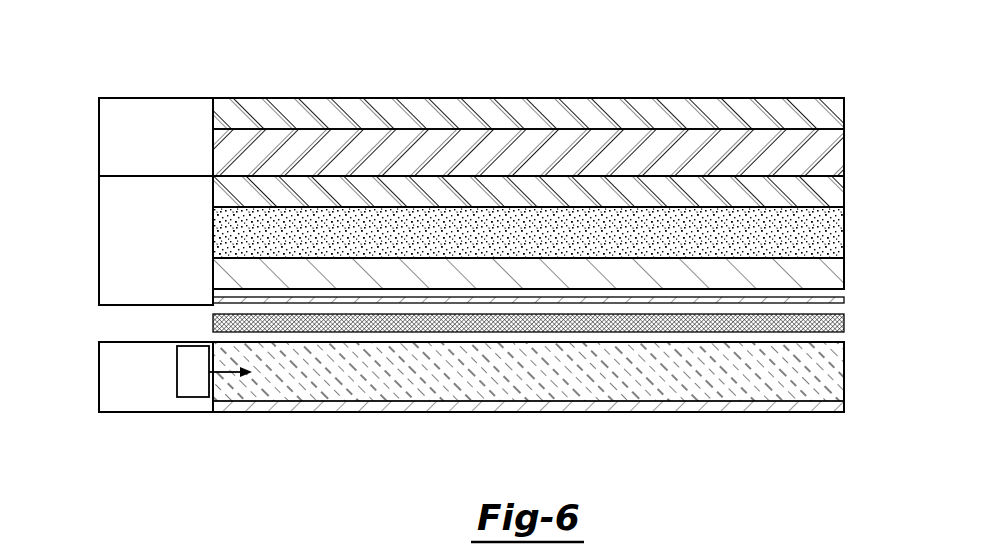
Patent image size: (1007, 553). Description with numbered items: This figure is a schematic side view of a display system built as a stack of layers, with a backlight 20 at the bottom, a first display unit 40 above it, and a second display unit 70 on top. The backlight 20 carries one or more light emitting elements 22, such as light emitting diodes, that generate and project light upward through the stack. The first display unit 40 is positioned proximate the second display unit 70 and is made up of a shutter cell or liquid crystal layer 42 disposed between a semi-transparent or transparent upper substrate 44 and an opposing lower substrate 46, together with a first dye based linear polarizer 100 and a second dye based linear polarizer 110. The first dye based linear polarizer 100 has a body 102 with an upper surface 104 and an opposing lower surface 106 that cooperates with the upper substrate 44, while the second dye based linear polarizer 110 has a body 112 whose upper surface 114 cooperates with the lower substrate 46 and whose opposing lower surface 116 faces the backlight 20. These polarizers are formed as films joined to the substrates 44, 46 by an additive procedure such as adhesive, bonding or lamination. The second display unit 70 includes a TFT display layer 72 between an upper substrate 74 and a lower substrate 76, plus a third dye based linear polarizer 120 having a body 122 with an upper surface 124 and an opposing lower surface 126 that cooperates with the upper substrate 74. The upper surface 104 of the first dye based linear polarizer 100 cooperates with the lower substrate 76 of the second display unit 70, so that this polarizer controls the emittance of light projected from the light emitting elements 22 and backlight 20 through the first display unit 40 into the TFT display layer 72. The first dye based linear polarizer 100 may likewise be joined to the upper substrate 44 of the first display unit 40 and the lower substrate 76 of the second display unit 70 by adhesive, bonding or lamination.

The backlight 20 is at (86, 370).
The light emitting elements 22 is at (187, 372).
The first display unit 40 is at (86, 233).
The liquid crystal layer 42 is at (858, 232).
The upper substrate 44 is at (368, 207).
The lower substrate 46 is at (439, 258).
The second display unit 70 is at (86, 135).
The TFT display layer 72 is at (858, 152).
The upper substrate 74 is at (395, 139).
The lower substrate 76 is at (545, 176).
The first dye based linear polarizer 100 is at (858, 190).
The body 102 is at (223, 196).
The upper surface 104 is at (627, 176).
The lower surface 106 is at (293, 207).
The second dye based linear polarizer 110 is at (858, 270).
The body 112 is at (223, 275).
The upper surface 114 is at (657, 258).
The lower surface 116 is at (730, 289).
The third dye based linear polarizer 120 is at (813, 88).
The body 122 is at (223, 116).
The upper surface 124 is at (253, 98).
The lower surface 126 is at (284, 130).